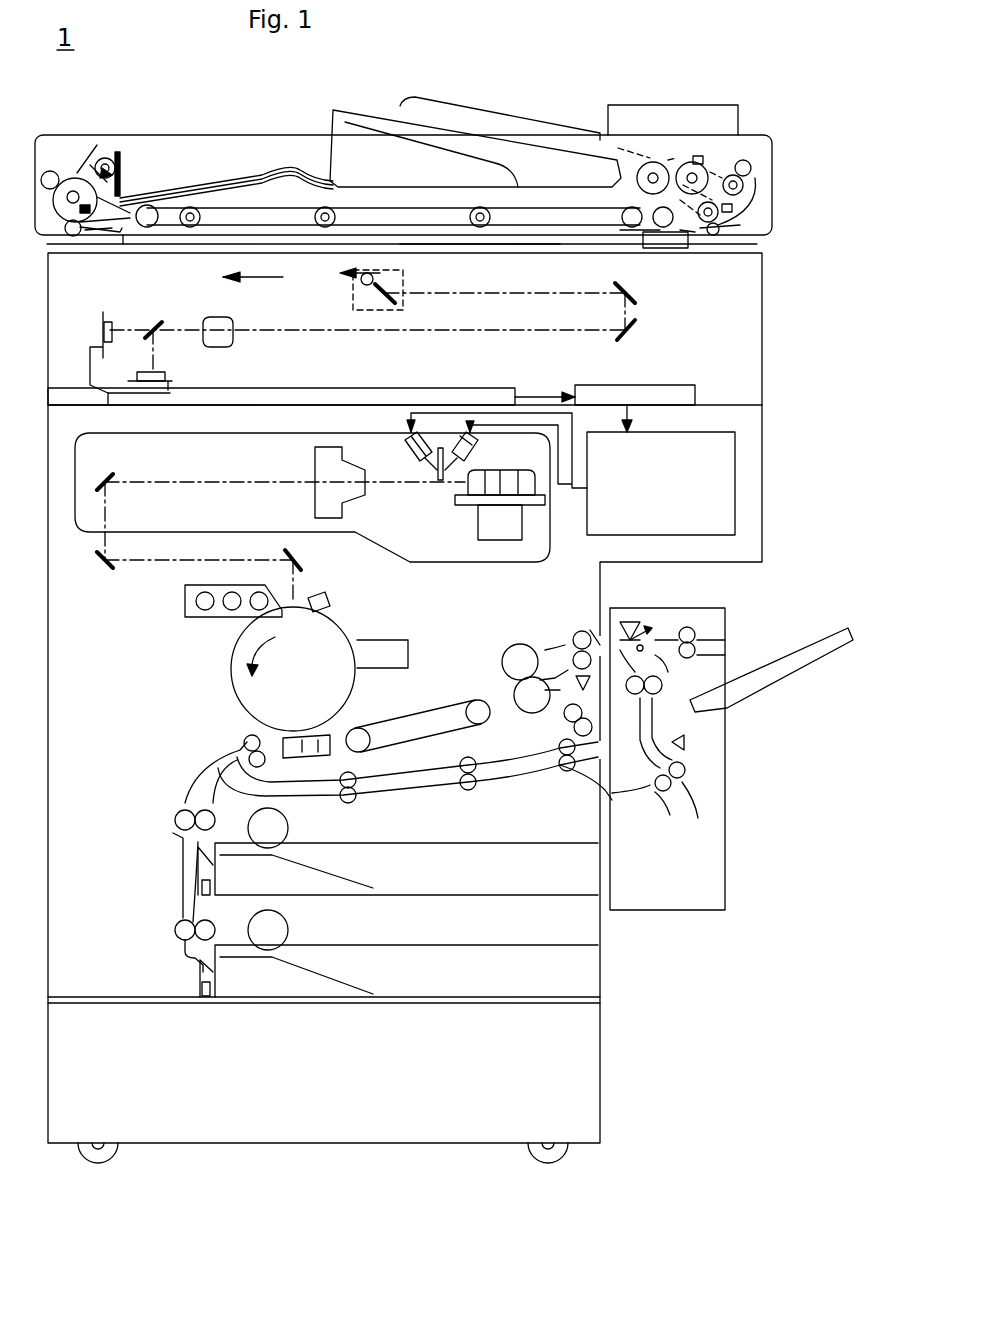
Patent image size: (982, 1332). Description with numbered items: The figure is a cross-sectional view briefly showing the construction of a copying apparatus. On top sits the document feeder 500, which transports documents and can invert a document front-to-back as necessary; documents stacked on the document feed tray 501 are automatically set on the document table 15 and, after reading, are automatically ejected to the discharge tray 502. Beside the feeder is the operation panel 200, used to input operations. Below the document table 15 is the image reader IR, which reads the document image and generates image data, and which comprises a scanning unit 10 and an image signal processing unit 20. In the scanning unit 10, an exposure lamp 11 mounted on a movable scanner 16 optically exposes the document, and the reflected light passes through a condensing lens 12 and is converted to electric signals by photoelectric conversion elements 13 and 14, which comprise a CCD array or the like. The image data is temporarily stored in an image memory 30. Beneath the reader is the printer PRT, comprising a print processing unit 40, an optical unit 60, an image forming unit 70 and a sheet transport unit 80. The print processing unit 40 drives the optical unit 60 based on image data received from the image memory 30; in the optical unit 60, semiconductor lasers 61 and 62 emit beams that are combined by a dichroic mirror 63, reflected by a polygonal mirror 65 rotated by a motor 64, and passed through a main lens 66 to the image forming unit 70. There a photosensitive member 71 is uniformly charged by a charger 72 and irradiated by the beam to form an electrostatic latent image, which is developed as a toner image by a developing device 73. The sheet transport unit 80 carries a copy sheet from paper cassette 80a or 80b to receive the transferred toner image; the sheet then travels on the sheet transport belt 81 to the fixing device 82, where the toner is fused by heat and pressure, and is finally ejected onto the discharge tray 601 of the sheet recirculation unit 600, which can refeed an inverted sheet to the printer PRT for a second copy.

The document feeder 500 is at (832, 154).
The document feed tray 501 is at (473, 128).
The discharge tray 502 is at (179, 182).
The operation panel 200 is at (672, 105).
The image reader IR is at (770, 372).
The scanning unit 10 is at (360, 325).
The exposure lamp 11 is at (352, 283).
The condensing lens 12 is at (235, 340).
The photoelectric conversion element 13 is at (112, 322).
The photoelectric conversion element 14 is at (165, 375).
The document table 15 is at (478, 245).
The movable scanner 16 is at (404, 272).
The image signal processing unit 20 is at (427, 395).
The image memory 30 is at (590, 395).
The print processing unit 40 is at (735, 456).
The optical unit 60 is at (228, 464).
The semiconductor laser 61 is at (480, 452).
The semiconductor laser 62 is at (408, 445).
The dichroic mirror 63 is at (440, 478).
The motor 64 is at (500, 540).
The polygonal mirror 65 is at (498, 487).
The main lens 66 is at (315, 500).
The image forming unit 70 is at (447, 592).
The photosensitive member 71 is at (319, 669).
The charger 72 is at (330, 604).
The developing device 73 is at (185, 601).
The printer PRT is at (828, 542).
The sheet transport unit 80 is at (468, 680).
The paper cassette 80a is at (543, 852).
The paper cassette 80b is at (510, 960).
The sheet transport belt 81 is at (383, 725).
The fixing device 82 is at (522, 708).
The sheet recirculation unit 600 is at (808, 882).
The discharge tray 601 is at (792, 656).